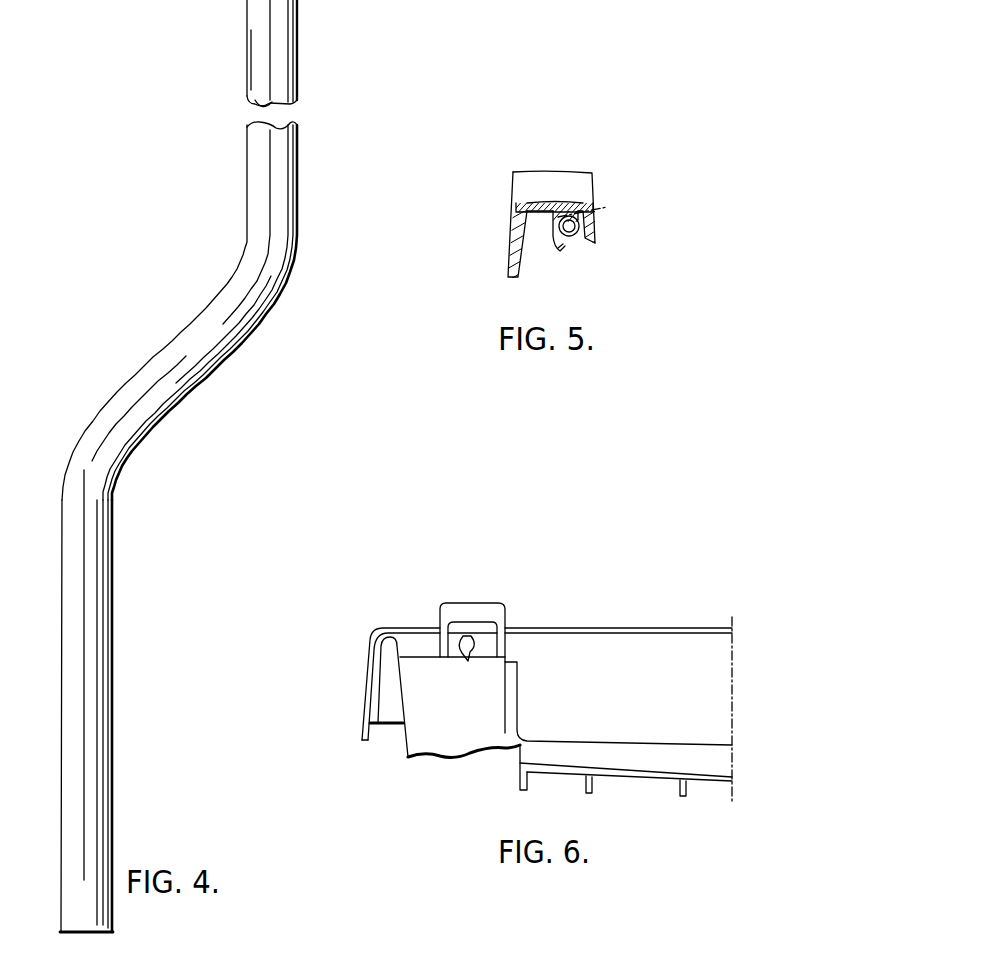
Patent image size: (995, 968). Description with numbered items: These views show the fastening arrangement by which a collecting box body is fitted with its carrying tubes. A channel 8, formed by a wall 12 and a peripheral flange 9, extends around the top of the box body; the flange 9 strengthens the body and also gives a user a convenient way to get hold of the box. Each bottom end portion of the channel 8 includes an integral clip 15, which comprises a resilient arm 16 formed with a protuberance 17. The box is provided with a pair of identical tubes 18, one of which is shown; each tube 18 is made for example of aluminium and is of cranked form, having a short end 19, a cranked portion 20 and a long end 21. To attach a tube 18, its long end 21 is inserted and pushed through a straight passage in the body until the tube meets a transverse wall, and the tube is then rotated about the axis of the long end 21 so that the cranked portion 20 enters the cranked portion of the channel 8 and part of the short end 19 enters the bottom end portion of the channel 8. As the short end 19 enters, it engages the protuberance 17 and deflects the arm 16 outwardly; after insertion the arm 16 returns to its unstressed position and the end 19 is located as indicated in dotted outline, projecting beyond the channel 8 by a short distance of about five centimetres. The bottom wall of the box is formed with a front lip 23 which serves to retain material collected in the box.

In FIG. 5, the channel 8 is at (550, 253).
In FIG. 6, the channel 8 is at (384, 705).
In FIG. 5, the peripheral flange 9 is at (516, 226).
In FIG. 6, the peripheral flange 9 is at (370, 670).
In FIG. 5, the wall 12 is at (538, 203).
In FIG. 5, the integral clip 15 is at (543, 218).
In FIG. 5, the resilient arm 16 is at (585, 211).
In FIG. 5, the protuberance 17 is at (566, 244).
In FIG. 4, the tube 18 is at (178, 527).
In FIG. 4, the short end 19 is at (113, 608).
In FIG. 5, the short end 19 is at (602, 207).
In FIG. 4, the cranked portion 20 is at (165, 355).
In FIG. 4, the long end 21 is at (298, 33).
In FIG. 6, the front lip 23 is at (650, 763).